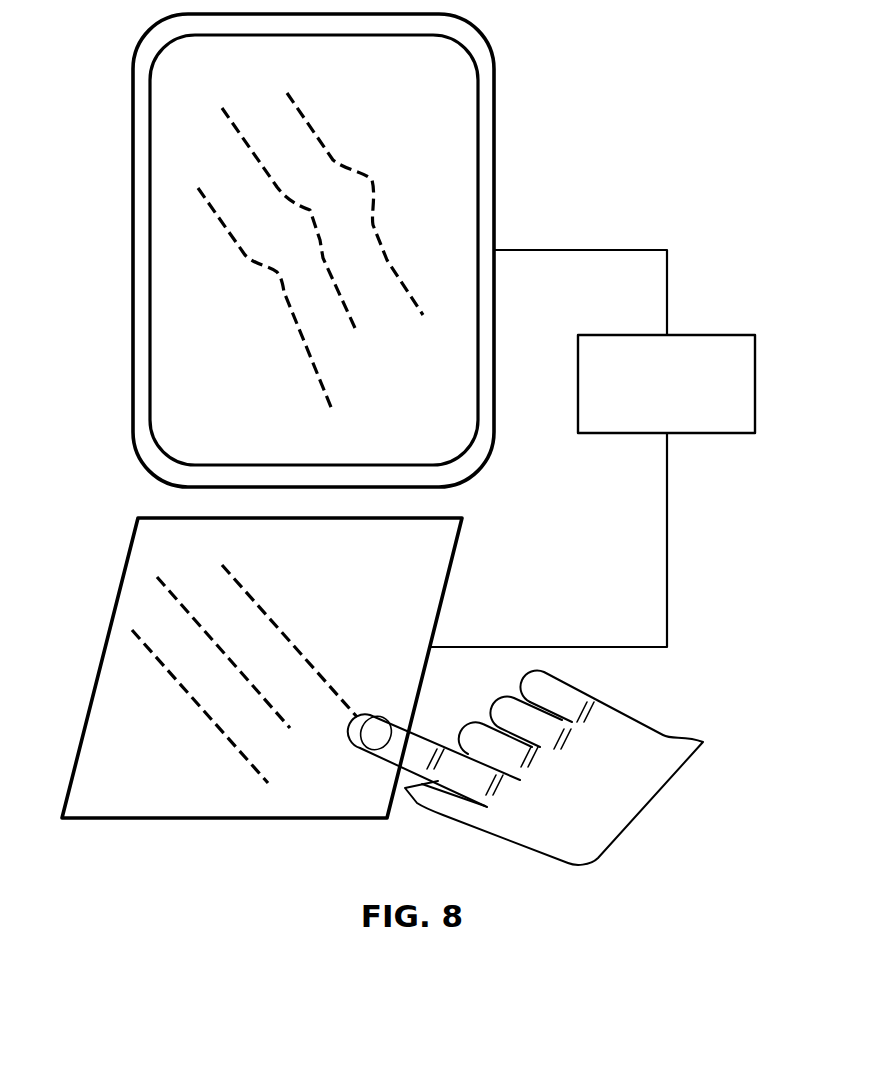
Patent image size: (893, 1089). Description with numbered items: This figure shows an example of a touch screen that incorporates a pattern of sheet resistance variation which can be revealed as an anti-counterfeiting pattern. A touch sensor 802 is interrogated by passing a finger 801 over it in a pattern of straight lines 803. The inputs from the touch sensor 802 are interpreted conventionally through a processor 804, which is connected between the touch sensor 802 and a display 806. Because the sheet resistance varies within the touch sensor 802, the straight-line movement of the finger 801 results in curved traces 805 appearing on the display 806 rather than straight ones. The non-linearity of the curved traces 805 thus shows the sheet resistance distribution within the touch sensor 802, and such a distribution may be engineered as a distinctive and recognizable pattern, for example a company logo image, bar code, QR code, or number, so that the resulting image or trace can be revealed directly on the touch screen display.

The finger 801 is at (425, 731).
The touch sensor 802 is at (447, 598).
The straight lines 803 is at (295, 648).
The processor 804 is at (649, 412).
The curved traces 805 is at (338, 162).
The display 806 is at (497, 233).